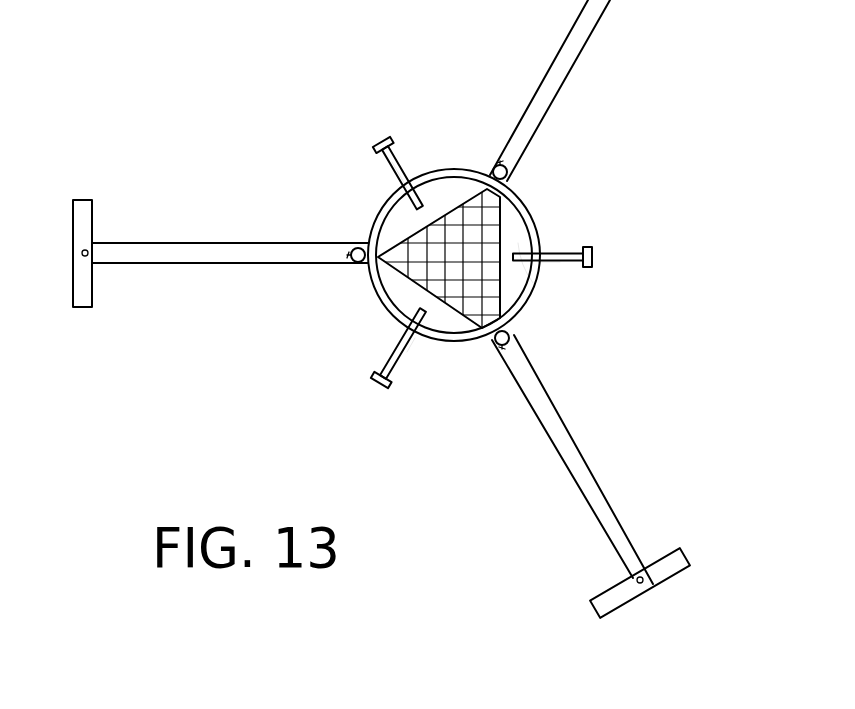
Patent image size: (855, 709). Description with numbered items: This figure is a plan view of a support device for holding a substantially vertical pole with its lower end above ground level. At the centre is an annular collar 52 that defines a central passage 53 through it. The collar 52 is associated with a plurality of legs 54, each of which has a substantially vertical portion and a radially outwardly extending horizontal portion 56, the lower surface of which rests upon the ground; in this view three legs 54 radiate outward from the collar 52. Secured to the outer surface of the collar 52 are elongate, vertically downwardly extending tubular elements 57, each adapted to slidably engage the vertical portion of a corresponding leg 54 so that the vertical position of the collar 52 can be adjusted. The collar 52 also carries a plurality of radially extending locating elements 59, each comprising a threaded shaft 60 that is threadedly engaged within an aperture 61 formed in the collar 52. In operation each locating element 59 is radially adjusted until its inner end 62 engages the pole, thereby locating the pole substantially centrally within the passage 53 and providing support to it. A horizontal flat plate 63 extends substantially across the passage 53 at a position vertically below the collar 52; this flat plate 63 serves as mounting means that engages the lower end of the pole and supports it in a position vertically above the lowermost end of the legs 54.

The annular collar 52 is at (523, 207).
The central passage 53 is at (518, 243).
The legs 54 is at (615, 95).
The horizontal portion 56 is at (562, 52).
The tubular element 57 is at (486, 165).
The locating element 59 is at (374, 113).
The threaded shaft 60 is at (392, 162).
The aperture 61 is at (538, 262).
The inner end 62 is at (533, 283).
The horizontal flat plate 63 is at (383, 287).